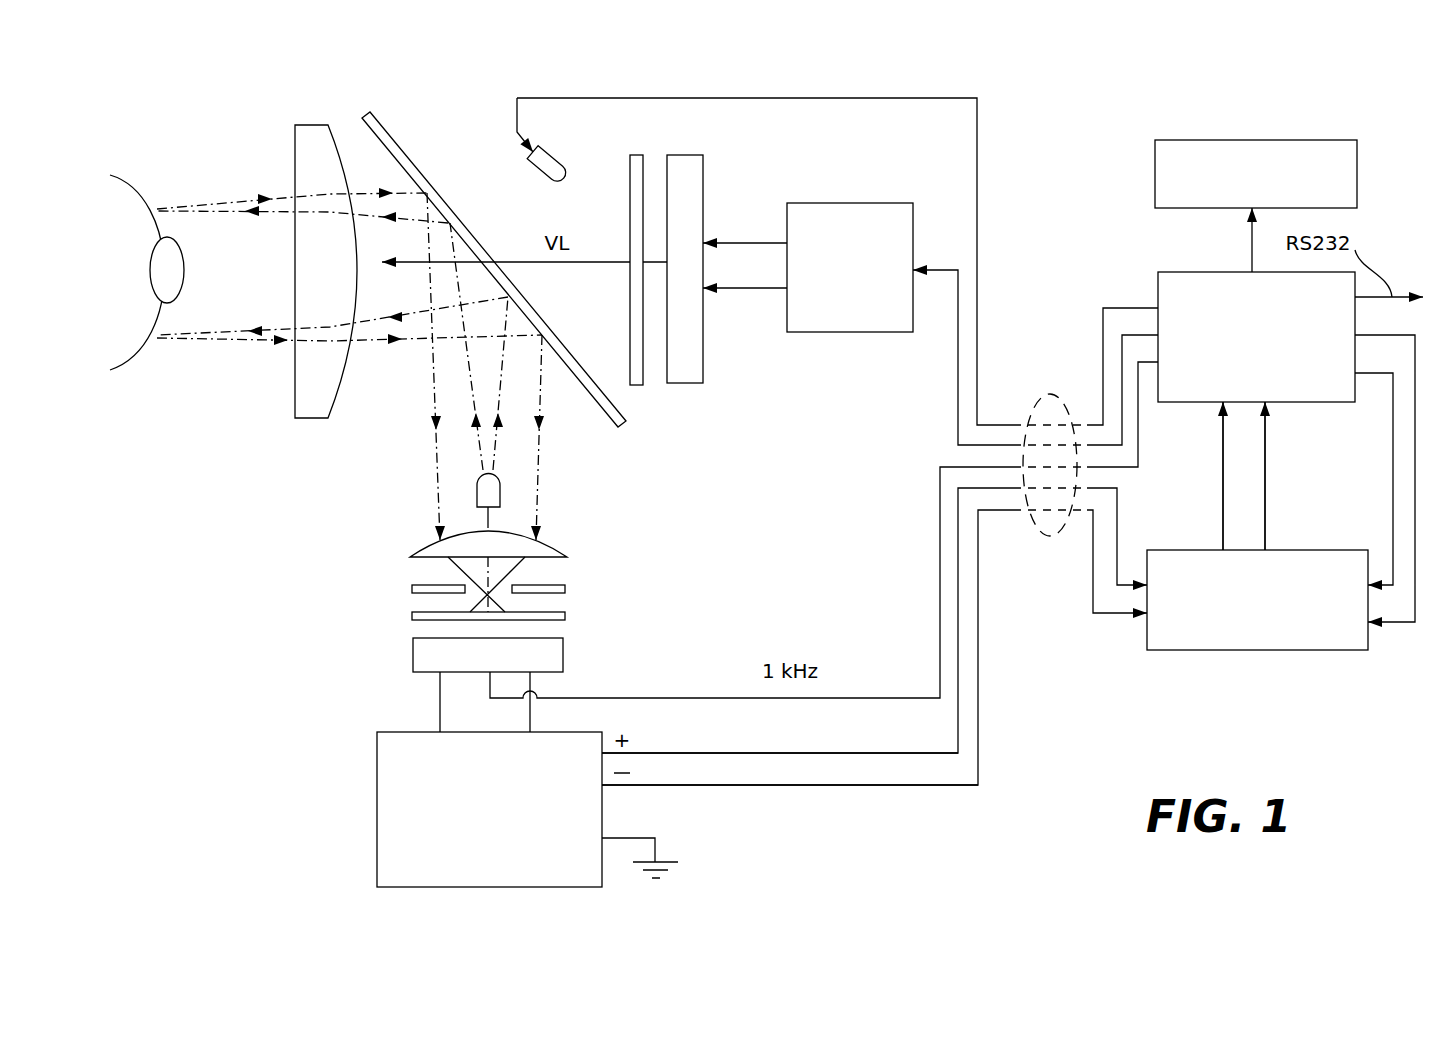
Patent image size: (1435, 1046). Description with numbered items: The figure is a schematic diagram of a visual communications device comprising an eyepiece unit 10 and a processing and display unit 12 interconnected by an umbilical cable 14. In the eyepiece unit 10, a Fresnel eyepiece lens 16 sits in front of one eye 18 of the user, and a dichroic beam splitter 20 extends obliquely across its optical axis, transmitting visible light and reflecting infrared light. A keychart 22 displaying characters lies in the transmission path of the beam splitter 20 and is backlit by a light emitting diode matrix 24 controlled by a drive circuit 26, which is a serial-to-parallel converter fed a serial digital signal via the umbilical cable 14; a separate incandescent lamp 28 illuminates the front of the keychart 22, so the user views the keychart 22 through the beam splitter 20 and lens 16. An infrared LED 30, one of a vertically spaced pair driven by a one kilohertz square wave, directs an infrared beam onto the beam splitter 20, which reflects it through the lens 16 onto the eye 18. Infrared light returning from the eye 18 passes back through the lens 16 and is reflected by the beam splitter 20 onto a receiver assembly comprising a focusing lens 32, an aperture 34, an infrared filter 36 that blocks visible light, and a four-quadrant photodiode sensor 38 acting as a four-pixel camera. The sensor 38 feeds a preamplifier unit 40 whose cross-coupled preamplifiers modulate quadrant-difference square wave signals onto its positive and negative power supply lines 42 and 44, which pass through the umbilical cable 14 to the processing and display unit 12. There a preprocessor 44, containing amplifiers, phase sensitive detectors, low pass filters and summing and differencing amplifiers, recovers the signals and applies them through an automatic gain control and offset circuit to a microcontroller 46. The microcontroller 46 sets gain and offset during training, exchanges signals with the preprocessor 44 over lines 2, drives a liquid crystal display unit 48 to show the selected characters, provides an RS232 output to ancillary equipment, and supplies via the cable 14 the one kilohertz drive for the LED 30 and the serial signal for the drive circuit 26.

The signal lines between preprocessor and microcontroller 2 is at (1223, 457).
The eyepiece unit 10 is at (308, 600).
The processing and display unit 12 is at (1120, 698).
The umbilical cable 14 is at (1045, 536).
The Fresnel eyepiece lens 16 is at (295, 125).
The eye 18 is at (125, 183).
The dichroic beam splitter 20 is at (412, 158).
The keychart 22 is at (637, 155).
The light emitting diode matrix 24 is at (698, 155).
The drive circuit 26 is at (847, 333).
The incandescent lamp 28 is at (562, 180).
The infrared LED 30 is at (500, 480).
The focusing lens 32 is at (547, 545).
The aperture 34 is at (565, 586).
The infrared filter 36 is at (565, 614).
The photodiode sensor 38 is at (563, 655).
The preamplifier unit 40 is at (377, 790).
The positive power supply line 42 is at (790, 753).
The preprocessor 44 is at (818, 785).
The microcontroller 46 is at (1293, 402).
The liquid crystal display unit 48 is at (1348, 138).